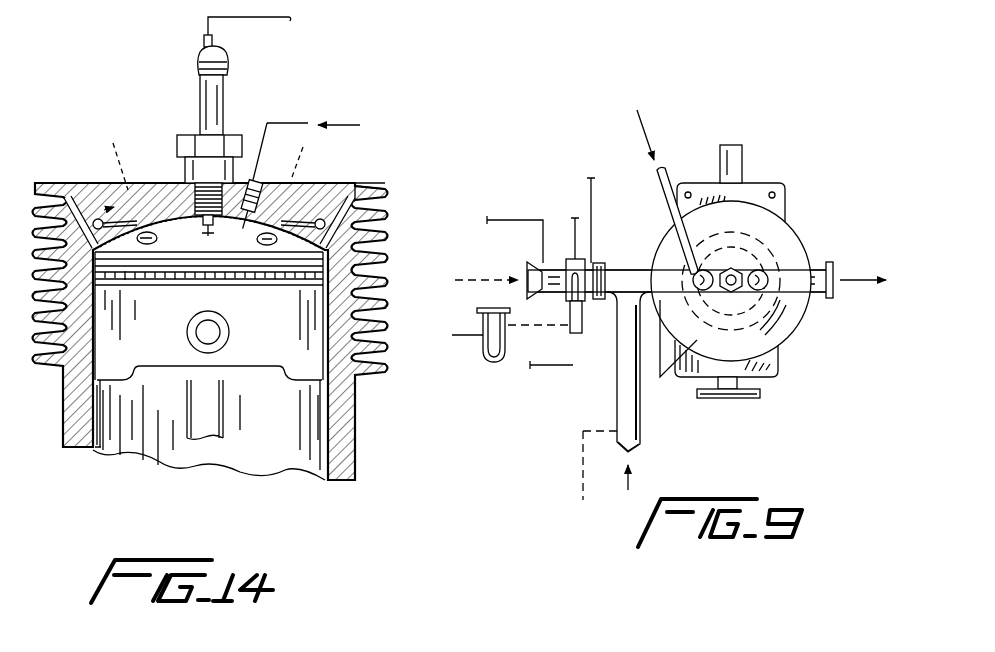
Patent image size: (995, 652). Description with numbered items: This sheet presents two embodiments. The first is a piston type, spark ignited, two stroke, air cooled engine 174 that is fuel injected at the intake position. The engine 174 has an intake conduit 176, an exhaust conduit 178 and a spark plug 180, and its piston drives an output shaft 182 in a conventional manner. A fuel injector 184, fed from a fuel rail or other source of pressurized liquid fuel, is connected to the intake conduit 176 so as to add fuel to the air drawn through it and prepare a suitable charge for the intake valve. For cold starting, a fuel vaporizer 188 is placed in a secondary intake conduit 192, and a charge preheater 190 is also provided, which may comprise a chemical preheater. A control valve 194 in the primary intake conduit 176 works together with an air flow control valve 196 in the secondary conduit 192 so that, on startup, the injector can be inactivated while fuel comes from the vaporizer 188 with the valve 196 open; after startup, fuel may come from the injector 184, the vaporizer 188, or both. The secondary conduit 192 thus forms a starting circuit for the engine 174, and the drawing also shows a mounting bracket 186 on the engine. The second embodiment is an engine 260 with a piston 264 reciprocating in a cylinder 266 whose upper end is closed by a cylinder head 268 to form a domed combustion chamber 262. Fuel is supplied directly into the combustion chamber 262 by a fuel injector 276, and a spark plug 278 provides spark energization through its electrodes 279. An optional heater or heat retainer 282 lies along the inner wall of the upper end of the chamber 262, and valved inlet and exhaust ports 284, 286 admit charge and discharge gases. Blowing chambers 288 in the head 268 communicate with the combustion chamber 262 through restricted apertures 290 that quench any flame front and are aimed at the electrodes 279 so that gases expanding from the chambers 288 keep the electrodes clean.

In FIG. 14, the engine 260 is at (402, 203).
In FIG. 14, the domed combustion chamber 262 is at (168, 222).
In FIG. 14, the piston 264 is at (317, 387).
In FIG. 14, the cylinder 266 is at (103, 447).
In FIG. 14, the cylinder head 268 is at (335, 193).
In FIG. 14, the fuel injector 276 is at (255, 180).
In FIG. 14, the spark plug 278 is at (220, 97).
In FIG. 14, the electrodes 279 is at (210, 238).
In FIG. 14, the heater or heat retainer 282 is at (62, 372).
In FIG. 14, the inlet port 284 is at (122, 320).
In FIG. 14, the exhaust port 286 is at (266, 246).
In FIG. 14, the blowing chambers 288 is at (94, 222).
In FIG. 14, the restricted apertures 290 is at (337, 187).
In FIG. 9, the engine 174 is at (792, 215).
In FIG. 9, the intake conduit 176 is at (645, 270).
In FIG. 9, the exhaust conduit 178 is at (820, 270).
In FIG. 9, the spark plug 180 is at (740, 293).
In FIG. 9, the output shaft 182 is at (747, 155).
In FIG. 9, the fuel injector 184 is at (663, 175).
In FIG. 9, the bracket 186 is at (720, 307).
In FIG. 9, the fuel vaporizer 188 is at (585, 322).
In FIG. 9, the charge preheater 190 is at (563, 260).
In FIG. 9, the secondary intake conduit 192 is at (613, 273).
In FIG. 9, the control valve 194 is at (632, 432).
In FIG. 9, the air flow control valve 196 is at (523, 268).